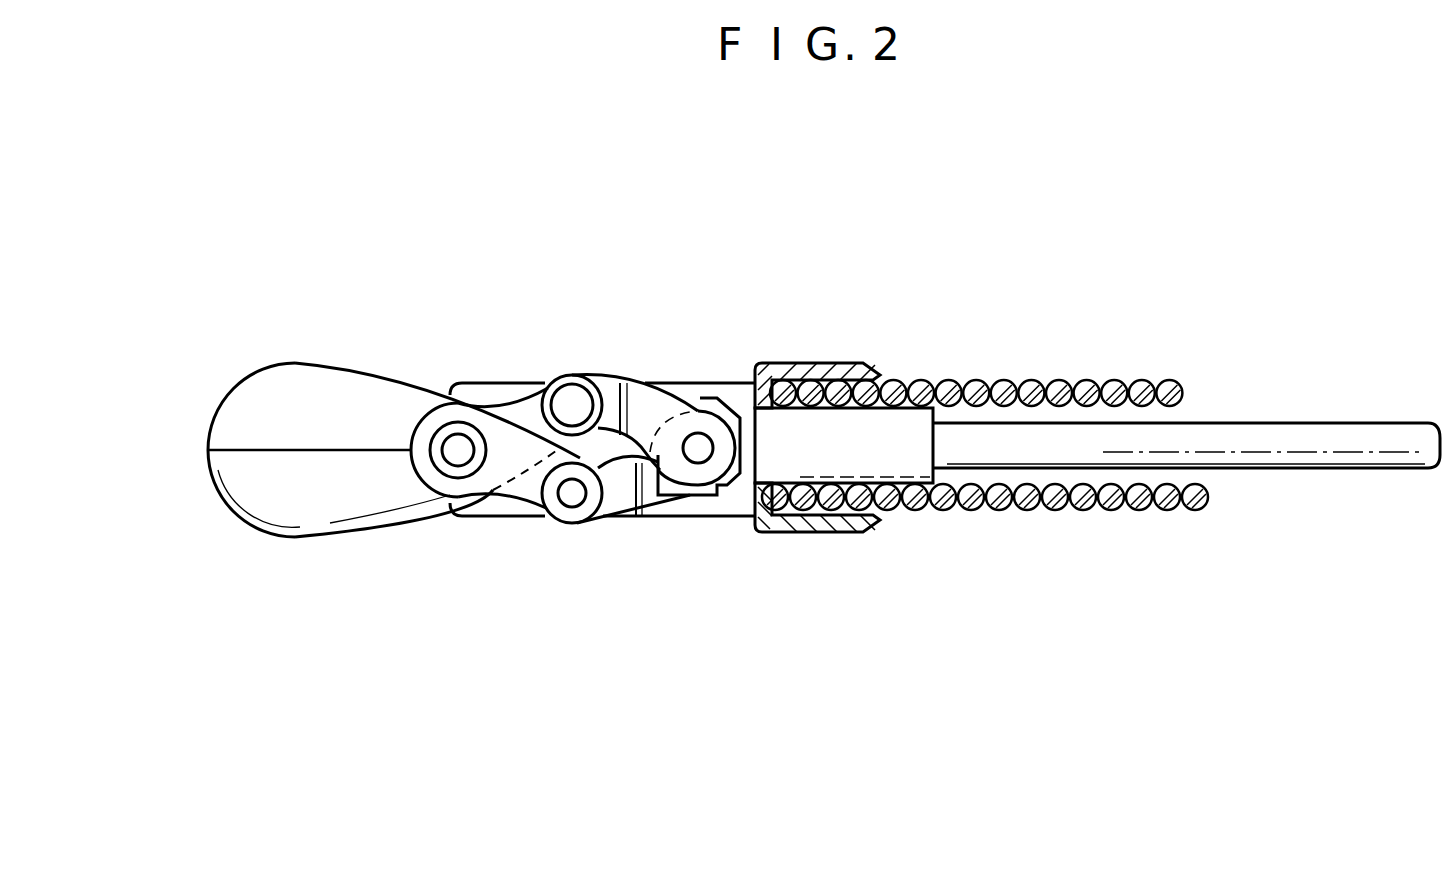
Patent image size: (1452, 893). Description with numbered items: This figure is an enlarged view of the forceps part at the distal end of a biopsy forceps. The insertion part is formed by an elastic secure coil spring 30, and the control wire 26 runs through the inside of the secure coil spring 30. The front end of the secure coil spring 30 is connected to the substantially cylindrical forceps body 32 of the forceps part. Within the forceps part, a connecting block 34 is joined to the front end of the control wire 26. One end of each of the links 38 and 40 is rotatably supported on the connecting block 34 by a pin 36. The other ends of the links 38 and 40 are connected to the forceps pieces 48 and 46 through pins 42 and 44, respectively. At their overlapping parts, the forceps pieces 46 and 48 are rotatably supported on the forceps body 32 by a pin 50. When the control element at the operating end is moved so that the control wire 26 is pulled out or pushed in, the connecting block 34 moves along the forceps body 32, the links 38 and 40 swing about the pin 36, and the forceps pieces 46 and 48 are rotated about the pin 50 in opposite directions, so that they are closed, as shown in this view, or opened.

The control wire 26 is at (1237, 425).
The secure coil spring 30 is at (1002, 380).
The forceps body 32 is at (693, 390).
The connecting block 34 is at (755, 458).
The pin 36 is at (697, 452).
The link 38 is at (635, 402).
The link 40 is at (622, 500).
The pin 42 is at (570, 400).
The pin 44 is at (571, 495).
The forceps piece 46 is at (295, 362).
The forceps piece 48 is at (303, 538).
The pin 50 is at (452, 452).